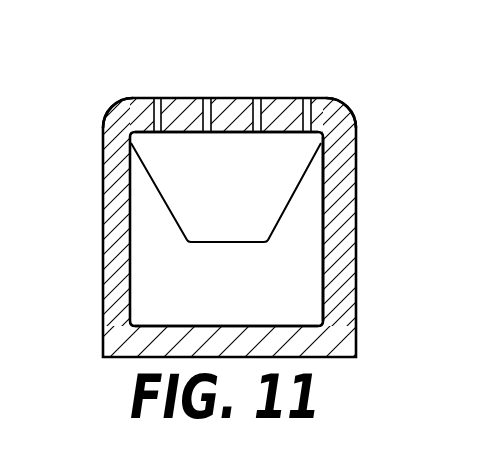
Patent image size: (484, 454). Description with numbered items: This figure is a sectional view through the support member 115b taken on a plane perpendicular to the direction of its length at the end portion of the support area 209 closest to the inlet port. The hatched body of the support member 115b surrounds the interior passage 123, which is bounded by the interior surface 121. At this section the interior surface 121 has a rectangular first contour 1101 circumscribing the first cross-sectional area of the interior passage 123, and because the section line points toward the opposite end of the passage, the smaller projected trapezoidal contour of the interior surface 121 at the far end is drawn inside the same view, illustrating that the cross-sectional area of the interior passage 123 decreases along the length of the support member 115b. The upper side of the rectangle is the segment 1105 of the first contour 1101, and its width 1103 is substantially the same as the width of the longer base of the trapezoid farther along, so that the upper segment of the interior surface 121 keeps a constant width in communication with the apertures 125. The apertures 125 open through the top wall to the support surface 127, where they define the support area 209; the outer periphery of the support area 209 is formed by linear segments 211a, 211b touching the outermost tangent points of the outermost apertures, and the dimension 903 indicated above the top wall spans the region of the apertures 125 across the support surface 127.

The support member 115b is at (102, 357).
The interior passage 123 is at (141, 305).
The width 1103 is at (322, 143).
The segment 1105 is at (170, 133).
The first contour 1101 is at (323, 252).
The interior surface 121 is at (290, 318).
The slot span width 903 is at (310, 42).
The support surface 127 is at (180, 98).
The support area 209 is at (212, 98).
The apertures 125 is at (257, 98).
The linear segment 211a is at (152, 98).
The linear segment 211b is at (309, 98).